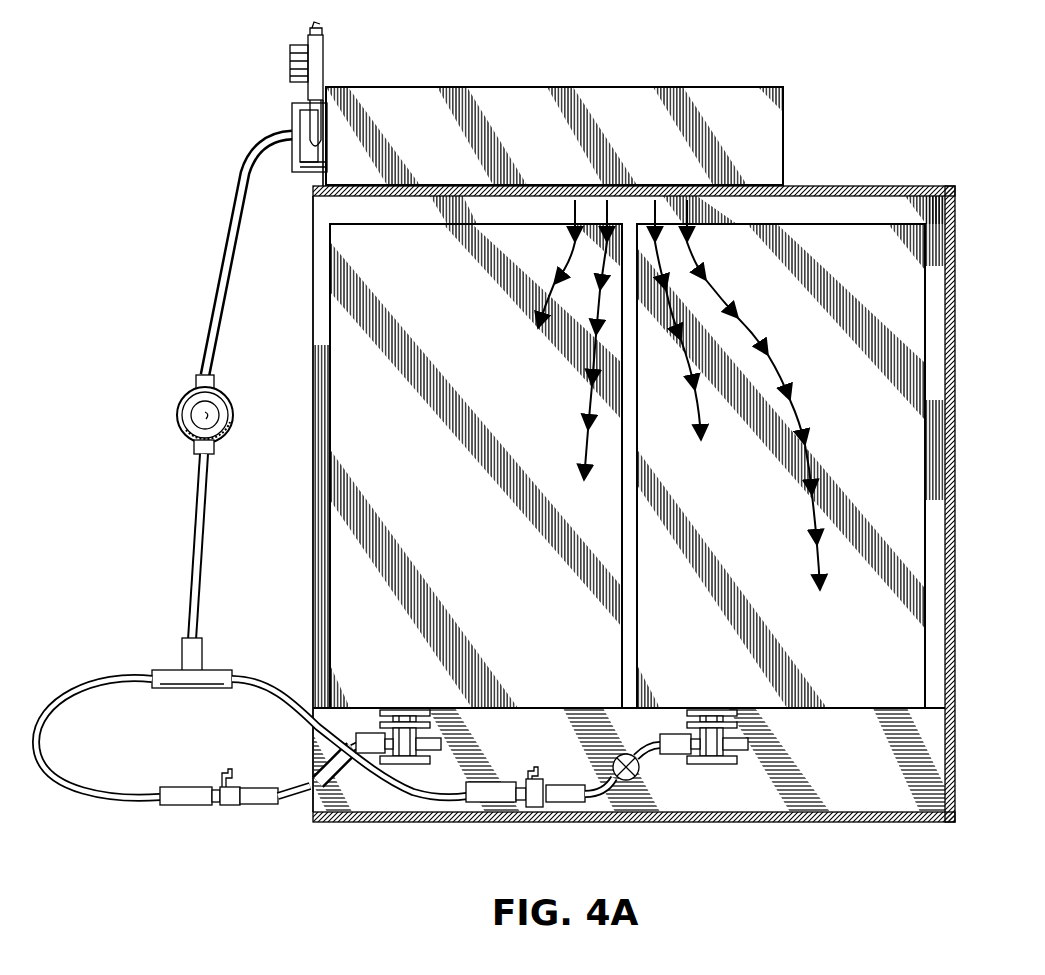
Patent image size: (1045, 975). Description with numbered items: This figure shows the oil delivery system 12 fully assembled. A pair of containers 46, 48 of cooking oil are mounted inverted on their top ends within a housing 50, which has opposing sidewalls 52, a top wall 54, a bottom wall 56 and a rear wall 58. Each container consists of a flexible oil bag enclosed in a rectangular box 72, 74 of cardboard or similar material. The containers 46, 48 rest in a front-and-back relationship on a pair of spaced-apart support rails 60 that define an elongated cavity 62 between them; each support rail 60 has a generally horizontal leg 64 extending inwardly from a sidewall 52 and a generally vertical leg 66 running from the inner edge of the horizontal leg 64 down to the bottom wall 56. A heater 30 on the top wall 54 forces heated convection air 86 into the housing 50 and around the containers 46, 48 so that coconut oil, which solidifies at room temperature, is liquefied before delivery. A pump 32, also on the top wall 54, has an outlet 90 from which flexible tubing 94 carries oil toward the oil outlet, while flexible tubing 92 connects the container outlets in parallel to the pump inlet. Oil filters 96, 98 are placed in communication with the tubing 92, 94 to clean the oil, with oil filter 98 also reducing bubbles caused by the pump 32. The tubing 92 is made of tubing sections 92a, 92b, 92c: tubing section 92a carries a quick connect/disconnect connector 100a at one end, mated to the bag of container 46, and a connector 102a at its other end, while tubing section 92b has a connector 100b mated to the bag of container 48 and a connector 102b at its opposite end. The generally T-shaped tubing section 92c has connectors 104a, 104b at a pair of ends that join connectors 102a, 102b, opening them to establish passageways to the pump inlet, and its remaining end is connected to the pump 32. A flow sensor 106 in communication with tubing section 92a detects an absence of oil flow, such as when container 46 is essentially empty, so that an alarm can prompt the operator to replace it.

The delivery system 12 is at (66, 156).
The heater 30 is at (485, 87).
The pump 32 is at (292, 118).
The container 46 is at (326, 296).
The container 48 is at (932, 336).
The housing 50 is at (638, 501).
The sidewall 52 is at (313, 244).
The top wall 54 is at (890, 186).
The bottom wall 56 is at (878, 822).
The rear wall 58 is at (960, 405).
The support rail 60 is at (934, 704).
The cavity 62 is at (563, 732).
The horizontal leg 64 is at (637, 700).
The vertical leg 66 is at (872, 768).
The box 72 is at (455, 294).
The box 74 is at (888, 294).
The heated convection air 86 is at (556, 282).
The outlet 90 is at (300, 172).
The flexible tubing 92 is at (369, 499).
The tubing section 92a is at (346, 712).
The tubing section 92b is at (615, 806).
The tubing section 92c is at (190, 494).
The flexible tubing 94 is at (320, 117).
The oil filter 96 is at (180, 410).
The oil filter 98 is at (292, 64).
The quick connect/disconnect connector 100a is at (430, 722).
The quick connect/disconnect connector 100b is at (738, 722).
The quick connect/disconnect connector 102a is at (246, 806).
The quick connect/disconnect connector 102b is at (567, 804).
The quick connect/disconnect connector 104a is at (185, 808).
The quick connect/disconnect connector 104b is at (490, 804).
The flow sensor 106 is at (308, 770).